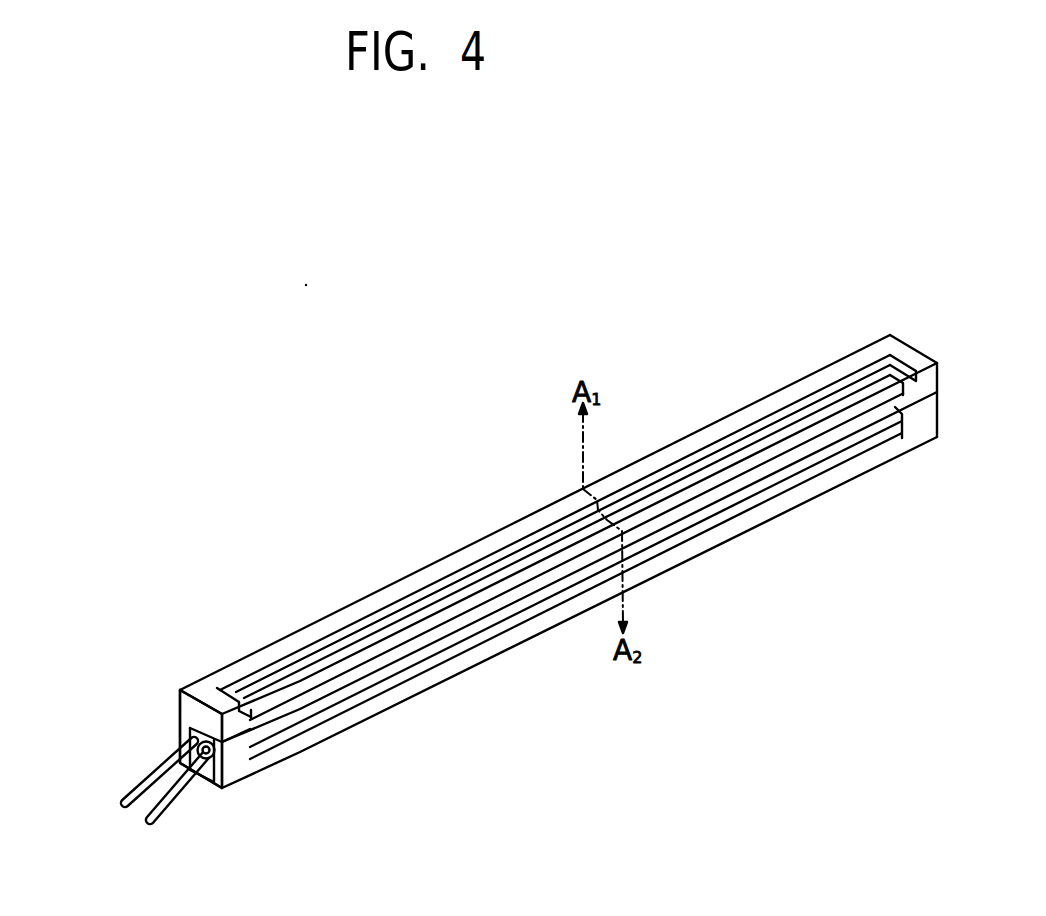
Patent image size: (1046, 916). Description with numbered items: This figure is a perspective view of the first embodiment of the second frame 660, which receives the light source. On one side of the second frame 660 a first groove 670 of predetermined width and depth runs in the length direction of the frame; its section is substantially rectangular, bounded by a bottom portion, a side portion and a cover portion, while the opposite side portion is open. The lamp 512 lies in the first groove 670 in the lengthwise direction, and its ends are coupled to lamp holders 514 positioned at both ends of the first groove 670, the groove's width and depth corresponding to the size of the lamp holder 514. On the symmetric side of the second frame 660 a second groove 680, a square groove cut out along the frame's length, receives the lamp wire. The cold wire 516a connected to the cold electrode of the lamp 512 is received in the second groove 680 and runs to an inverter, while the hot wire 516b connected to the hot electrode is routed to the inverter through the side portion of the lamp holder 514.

The second frame 660 is at (558, 561).
The lamp 512 is at (423, 650).
The first groove 670 is at (576, 583).
The lamp holder 514 is at (238, 757).
The second groove 680 is at (190, 735).
The cold wire 516a is at (128, 788).
The hot wire 516b is at (160, 804).